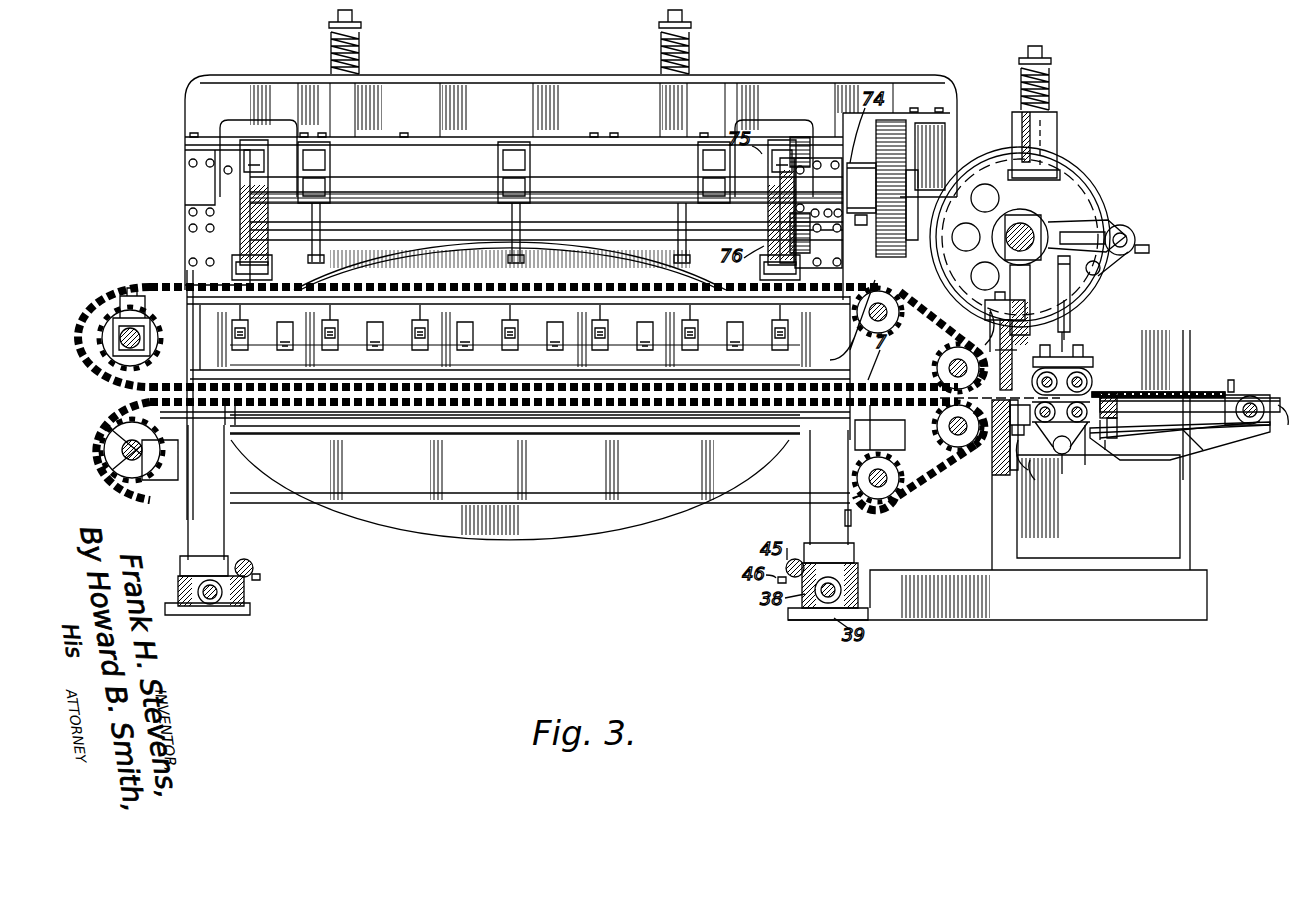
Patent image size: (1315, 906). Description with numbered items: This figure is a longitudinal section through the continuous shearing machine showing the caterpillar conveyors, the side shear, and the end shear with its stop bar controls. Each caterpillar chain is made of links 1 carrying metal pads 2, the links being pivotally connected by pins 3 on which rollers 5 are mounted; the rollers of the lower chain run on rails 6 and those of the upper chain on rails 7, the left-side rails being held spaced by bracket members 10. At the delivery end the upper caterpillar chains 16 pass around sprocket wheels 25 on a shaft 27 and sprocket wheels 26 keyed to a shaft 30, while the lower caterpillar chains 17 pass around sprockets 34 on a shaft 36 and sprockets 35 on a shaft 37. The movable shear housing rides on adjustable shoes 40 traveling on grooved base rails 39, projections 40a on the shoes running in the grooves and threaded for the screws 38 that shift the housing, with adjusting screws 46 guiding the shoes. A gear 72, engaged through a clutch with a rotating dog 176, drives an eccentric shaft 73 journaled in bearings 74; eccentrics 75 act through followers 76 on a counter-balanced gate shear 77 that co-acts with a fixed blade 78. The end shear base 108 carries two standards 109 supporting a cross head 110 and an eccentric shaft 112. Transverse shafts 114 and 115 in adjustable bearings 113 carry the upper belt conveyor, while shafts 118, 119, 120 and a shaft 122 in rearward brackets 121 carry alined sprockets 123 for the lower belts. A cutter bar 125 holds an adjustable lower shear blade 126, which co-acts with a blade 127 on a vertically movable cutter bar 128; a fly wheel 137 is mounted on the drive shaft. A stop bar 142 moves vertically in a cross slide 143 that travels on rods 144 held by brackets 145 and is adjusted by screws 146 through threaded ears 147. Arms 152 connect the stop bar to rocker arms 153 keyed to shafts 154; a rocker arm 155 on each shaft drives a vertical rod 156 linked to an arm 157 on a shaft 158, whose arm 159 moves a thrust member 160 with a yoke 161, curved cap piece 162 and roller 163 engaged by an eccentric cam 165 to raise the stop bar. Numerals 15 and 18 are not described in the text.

The links 1 is at (540, 412).
The metal pads 2 is at (578, 412).
The pins 3 is at (476, 376).
The rollers 5 is at (150, 286).
The rails 6 is at (262, 420).
The rails 7 is at (576, 376).
The bracket members 10 is at (528, 336).
The chain 15 is at (115, 293).
The upper caterpillar conveyor chains 16 is at (102, 328).
The lower caterpillar chains 17 is at (102, 448).
The chain 18 is at (98, 415).
The sprocket wheels 25 is at (881, 293).
The sprocket wheels 26 is at (948, 348).
The shaft 27 is at (850, 322).
The shaft 30 is at (1000, 388).
The sprockets 34 is at (948, 438).
The sprockets 35 is at (881, 502).
The shaft 36 is at (957, 460).
The shaft 37 is at (845, 524).
The screws 38 is at (234, 590).
The base rails 39 is at (178, 596).
The adjustable shoes 40 is at (850, 563).
The projections 40a is at (850, 594).
The adjusting screws 46 is at (256, 572).
The gear 72 is at (888, 126).
The eccentric shaft 73 is at (574, 184).
The bearings 74 is at (194, 183).
The eccentrics 75 is at (272, 152).
The followers 76 is at (260, 225).
The counter-balanced gate shear 77 is at (510, 391).
The fixed blade 78 is at (372, 427).
The end shear base 108 is at (1142, 610).
The standards 109 is at (1103, 450).
The cross head 110 is at (1048, 134).
The eccentric shaft 112 is at (1070, 232).
The adjustable bearings 113 is at (1073, 320).
The transverse shaft 114 is at (1070, 360).
The transverse shaft 115 is at (1084, 379).
The shaft 118 is at (1048, 442).
The shaft 119 is at (1085, 463).
The shaft 120 is at (1064, 458).
The brackets 121 is at (1216, 440).
The shaft 122 is at (1244, 403).
The alined sprockets 123 is at (1090, 470).
The cutter bar 125 is at (995, 490).
The adjustable lower shear blade 126 is at (1042, 485).
The blade 127 is at (1000, 330).
The vertically movable cutter bar 128 is at (985, 296).
The fly wheel 137 is at (1003, 128).
The stop bar 142 is at (1117, 417).
The cross slide 143 is at (1118, 438).
The rods 144 is at (1148, 441).
The brackets 145 is at (1244, 376).
The screws 146 is at (1196, 392).
The threaded ears 147 is at (1145, 394).
The arms 152 is at (1115, 460).
The rocker arms 153 is at (1115, 445).
The shafts 154 is at (1190, 462).
The rocker arm 155 is at (1026, 447).
The vertical rod 156 is at (1073, 300).
The arm 157 is at (1125, 234).
The shaft 158 is at (1092, 266).
The arm 159 is at (1102, 250).
The thrust member 160 is at (1078, 238).
The yoke 161 is at (1040, 226).
The curved cap piece 162 is at (1005, 250).
The roller 163 is at (1020, 301).
The eccentric cam 165 is at (1032, 202).
The rotating dog 176 is at (870, 208).